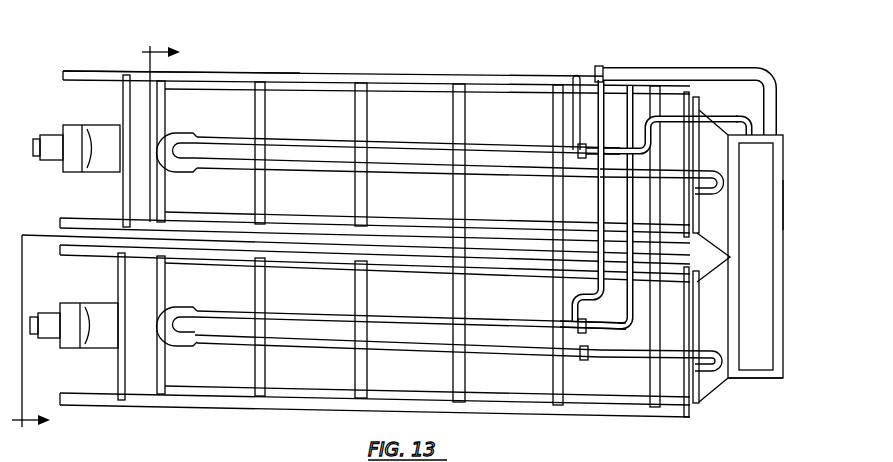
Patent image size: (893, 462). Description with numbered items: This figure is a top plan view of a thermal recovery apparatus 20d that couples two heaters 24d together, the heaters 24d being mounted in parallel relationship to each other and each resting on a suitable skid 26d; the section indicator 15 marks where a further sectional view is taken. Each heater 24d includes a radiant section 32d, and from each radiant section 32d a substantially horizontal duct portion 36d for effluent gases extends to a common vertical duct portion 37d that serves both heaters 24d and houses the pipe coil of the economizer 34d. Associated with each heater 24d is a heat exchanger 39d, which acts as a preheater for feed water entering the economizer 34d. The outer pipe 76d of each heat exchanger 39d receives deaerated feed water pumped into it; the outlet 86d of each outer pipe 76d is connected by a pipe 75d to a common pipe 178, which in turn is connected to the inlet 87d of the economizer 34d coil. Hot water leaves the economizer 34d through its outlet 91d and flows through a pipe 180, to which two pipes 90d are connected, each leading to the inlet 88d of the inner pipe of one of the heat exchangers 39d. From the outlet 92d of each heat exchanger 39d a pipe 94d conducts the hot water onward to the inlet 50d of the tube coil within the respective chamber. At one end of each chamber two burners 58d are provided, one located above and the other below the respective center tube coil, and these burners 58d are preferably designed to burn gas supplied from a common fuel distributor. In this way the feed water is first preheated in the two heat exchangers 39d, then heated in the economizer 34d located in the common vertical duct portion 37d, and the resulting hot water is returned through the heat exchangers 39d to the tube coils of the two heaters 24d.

The thermal recovery apparatus 20d is at (755, 45).
The heater 24d is at (497, 74).
The skid 26d is at (84, 52).
The section line 15- 15 is at (143, 60).
The burner 58d is at (92, 106).
The radiant section 32d is at (343, 240).
The heat exchanger 39d is at (339, 140).
The outer pipe 76d is at (495, 176).
The pipe 75d is at (573, 80).
The outlet 86d is at (573, 140).
The inlet 88d is at (580, 333).
The outlet 92d is at (599, 180).
The pipe 90d is at (630, 212).
The pipe 180 is at (680, 118).
The outlet 91d is at (752, 130).
The pipe 178 is at (636, 74).
The pipe 94d is at (642, 177).
The inlet 50d is at (701, 200).
The inlet 87d is at (783, 131).
The economizer 34d is at (786, 207).
The vertical duct portion 37d is at (783, 263).
The horizontal duct portion 36d is at (746, 379).